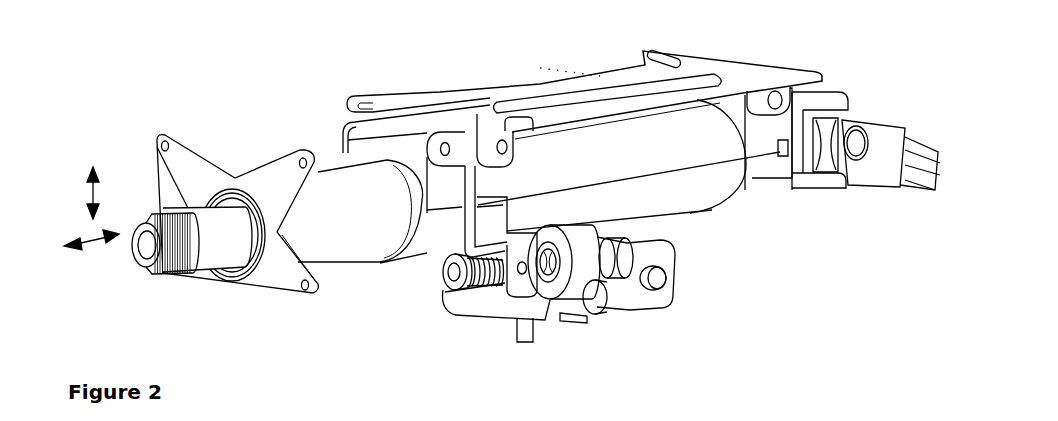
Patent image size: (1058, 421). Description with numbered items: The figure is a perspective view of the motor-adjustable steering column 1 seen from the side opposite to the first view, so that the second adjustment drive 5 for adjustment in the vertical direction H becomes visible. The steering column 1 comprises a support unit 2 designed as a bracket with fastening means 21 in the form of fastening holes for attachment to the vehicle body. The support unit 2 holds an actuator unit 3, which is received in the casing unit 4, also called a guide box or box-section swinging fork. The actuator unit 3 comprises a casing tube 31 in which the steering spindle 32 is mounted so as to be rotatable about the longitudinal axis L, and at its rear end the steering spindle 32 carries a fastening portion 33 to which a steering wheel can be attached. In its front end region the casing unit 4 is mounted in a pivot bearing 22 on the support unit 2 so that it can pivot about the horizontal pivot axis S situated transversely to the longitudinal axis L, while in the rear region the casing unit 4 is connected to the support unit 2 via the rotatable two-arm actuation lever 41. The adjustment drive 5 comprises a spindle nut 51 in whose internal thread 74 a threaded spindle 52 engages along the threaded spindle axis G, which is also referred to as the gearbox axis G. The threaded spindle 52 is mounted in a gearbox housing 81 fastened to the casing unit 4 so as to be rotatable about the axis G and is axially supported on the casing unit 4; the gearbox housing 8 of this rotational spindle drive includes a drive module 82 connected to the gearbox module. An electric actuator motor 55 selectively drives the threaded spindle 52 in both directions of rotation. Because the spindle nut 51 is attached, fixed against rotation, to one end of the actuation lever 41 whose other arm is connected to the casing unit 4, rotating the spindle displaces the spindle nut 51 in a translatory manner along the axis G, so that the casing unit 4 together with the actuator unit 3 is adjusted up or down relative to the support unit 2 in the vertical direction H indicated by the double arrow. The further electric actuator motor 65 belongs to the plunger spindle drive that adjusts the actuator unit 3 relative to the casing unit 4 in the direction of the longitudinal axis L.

The steering column 1 is at (522, 56).
The support unit 2 is at (584, 83).
The fastening means 21 is at (661, 49).
The pivot bearing 22 is at (777, 93).
The pivot axis S is at (873, 110).
The actuation lever 41 is at (490, 180).
The casing unit 4 is at (677, 143).
The actuator motor 65 is at (660, 257).
The gearbox housing 8 is at (612, 316).
The adjustment drive 5 is at (523, 297).
The gearbox housing 81 is at (583, 297).
The drive module 82 is at (549, 302).
The internal thread 74 is at (491, 290).
The spindle nut 51 is at (497, 283).
The threaded spindle 52 is at (477, 288).
The actuator motor 55 is at (467, 295).
The threaded spindle axis G is at (445, 278).
The actuator unit 3 is at (332, 283).
The casing tube 31 is at (350, 243).
The steering spindle 32 is at (204, 244).
The fastening portion 33 is at (158, 216).
The vertical direction H is at (88, 193).
The longitudinal axis L is at (115, 256).